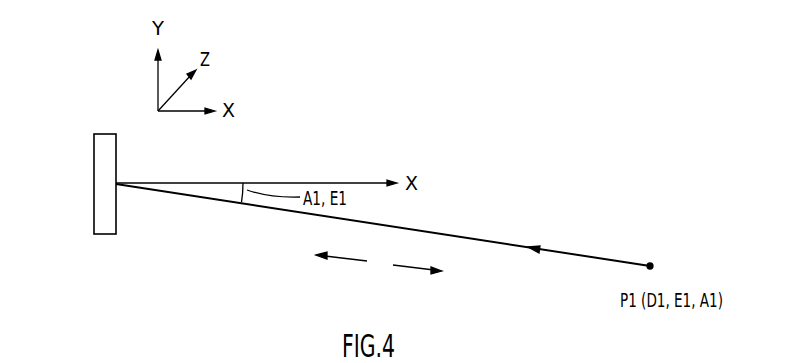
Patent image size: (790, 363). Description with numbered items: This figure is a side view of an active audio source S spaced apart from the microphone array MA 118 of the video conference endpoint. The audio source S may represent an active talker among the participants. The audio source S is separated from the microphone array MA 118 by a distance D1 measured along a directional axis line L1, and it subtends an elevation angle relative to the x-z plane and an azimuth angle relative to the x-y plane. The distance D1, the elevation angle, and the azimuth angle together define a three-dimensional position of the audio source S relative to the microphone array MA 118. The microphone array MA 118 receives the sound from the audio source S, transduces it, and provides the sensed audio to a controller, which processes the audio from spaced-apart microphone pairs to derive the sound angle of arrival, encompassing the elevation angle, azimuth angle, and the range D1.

The microphone array 118 is at (94, 172).
The directional axis line L1 is at (451, 233).
The distance D1 is at (380, 228).
The active audio source S is at (659, 268).